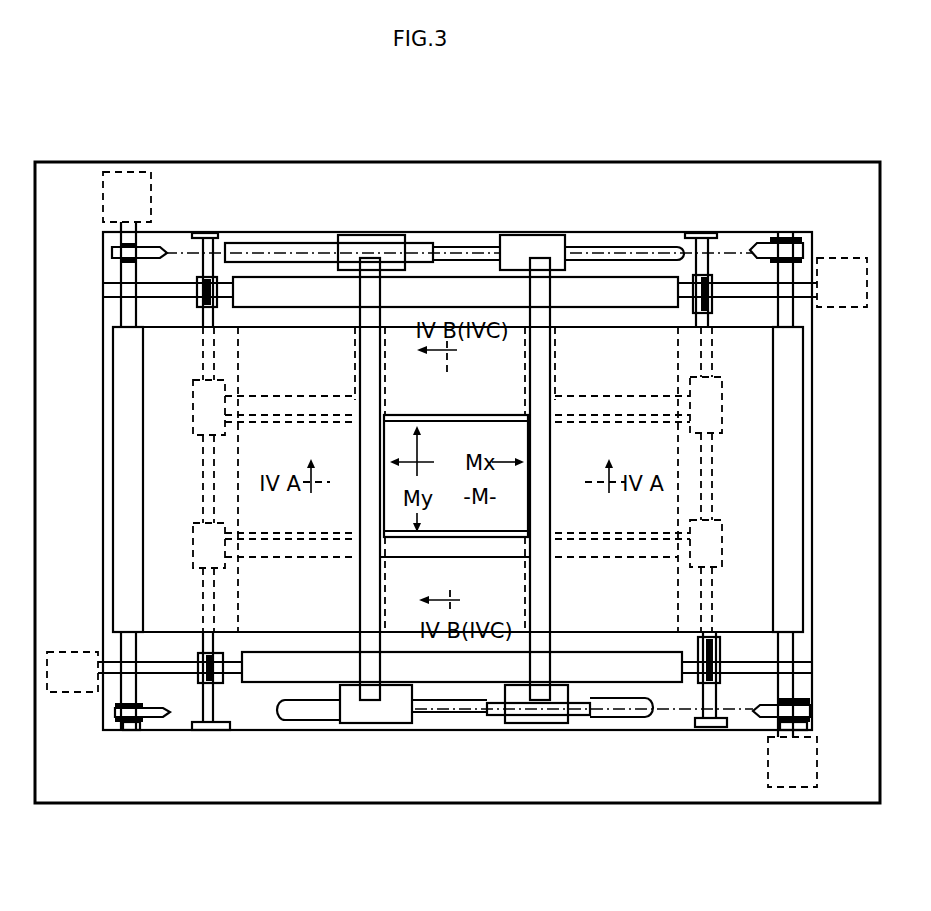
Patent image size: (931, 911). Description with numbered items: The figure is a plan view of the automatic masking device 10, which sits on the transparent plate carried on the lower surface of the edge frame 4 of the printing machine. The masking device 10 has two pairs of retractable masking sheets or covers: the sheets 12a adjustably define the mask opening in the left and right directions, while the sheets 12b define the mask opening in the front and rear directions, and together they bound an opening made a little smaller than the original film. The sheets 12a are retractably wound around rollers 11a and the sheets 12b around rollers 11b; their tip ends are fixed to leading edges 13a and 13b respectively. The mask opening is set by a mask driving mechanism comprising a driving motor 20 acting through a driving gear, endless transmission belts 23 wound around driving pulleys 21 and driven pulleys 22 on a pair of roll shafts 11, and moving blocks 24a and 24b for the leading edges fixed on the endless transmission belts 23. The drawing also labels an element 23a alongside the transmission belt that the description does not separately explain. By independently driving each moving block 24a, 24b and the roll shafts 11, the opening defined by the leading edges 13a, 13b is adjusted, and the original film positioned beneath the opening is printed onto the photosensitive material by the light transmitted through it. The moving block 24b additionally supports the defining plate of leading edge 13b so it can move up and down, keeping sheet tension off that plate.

The edge frame 4 is at (241, 160).
The masking device 10 is at (668, 142).
The roll shafts 11 is at (121, 313).
The roller 11a is at (113, 437).
The roller 11b is at (621, 247).
The retractable masking sheet 12a is at (593, 321).
The retractable masking sheet 12b is at (240, 362).
The leading edge 13a is at (384, 578).
The leading edge 13b is at (261, 423).
The driving motor 20 is at (151, 198).
The driving pulley 21 is at (112, 262).
The driven pulley 22 is at (198, 288).
The endless transmission belt 23 is at (495, 722).
The feed screw 23a is at (325, 243).
The moving block 24a is at (390, 235).
The moving block 24b is at (187, 398).